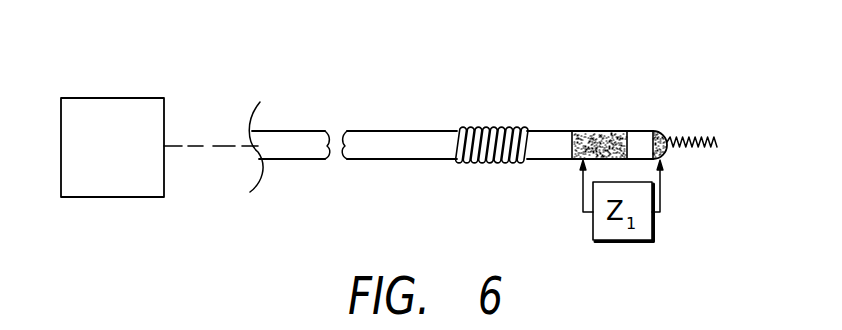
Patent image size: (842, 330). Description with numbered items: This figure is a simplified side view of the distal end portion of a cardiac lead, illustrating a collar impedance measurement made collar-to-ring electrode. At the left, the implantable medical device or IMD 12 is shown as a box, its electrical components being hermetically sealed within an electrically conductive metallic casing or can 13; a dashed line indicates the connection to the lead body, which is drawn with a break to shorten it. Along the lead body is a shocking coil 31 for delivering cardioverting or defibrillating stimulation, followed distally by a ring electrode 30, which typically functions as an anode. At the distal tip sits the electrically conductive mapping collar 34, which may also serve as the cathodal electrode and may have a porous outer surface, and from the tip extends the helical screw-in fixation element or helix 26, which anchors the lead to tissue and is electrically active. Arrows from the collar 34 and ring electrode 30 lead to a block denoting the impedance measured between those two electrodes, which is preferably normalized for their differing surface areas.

The implantable medical device (IMD) 12 is at (128, 161).
The casing or can 13 is at (127, 110).
The shocking coil 31 is at (485, 127).
The ring electrode 30 is at (590, 128).
The mapping collar 34 is at (657, 131).
The helix 26 is at (700, 138).